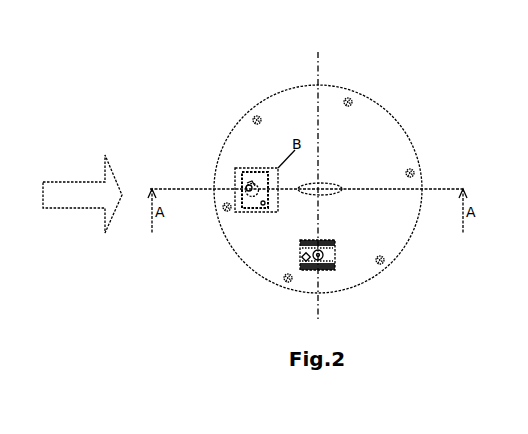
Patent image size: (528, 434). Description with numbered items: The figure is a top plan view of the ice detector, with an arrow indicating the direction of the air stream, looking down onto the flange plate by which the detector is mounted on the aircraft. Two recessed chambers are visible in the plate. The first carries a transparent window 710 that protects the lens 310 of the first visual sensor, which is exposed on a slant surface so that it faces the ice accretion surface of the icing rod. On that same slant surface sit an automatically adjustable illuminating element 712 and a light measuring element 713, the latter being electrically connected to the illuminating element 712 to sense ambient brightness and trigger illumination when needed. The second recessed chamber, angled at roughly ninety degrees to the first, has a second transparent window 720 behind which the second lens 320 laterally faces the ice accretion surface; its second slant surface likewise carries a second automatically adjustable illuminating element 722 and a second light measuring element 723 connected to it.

The lens 310 is at (235, 129).
The second lens 320 is at (406, 206).
The transparent window 710 is at (205, 172).
The automatically adjustable illuminating element 712 is at (210, 180).
The light measuring element 713 is at (205, 133).
The second transparent window 720 is at (405, 213).
The second automatically adjustable illuminating element 722 is at (337, 261).
The second light measuring element 723 is at (411, 185).